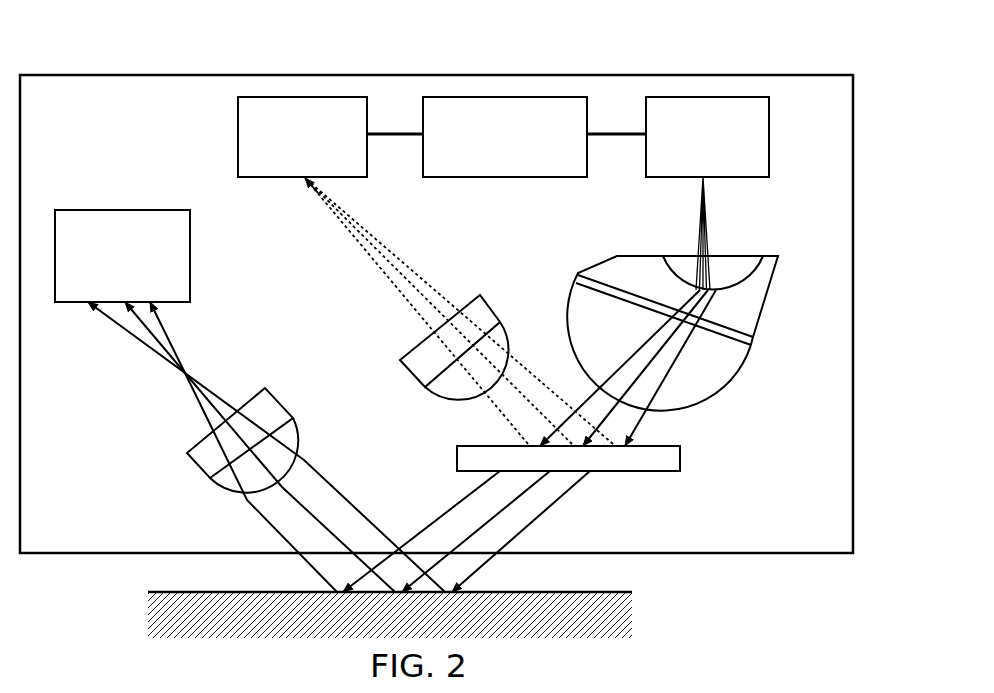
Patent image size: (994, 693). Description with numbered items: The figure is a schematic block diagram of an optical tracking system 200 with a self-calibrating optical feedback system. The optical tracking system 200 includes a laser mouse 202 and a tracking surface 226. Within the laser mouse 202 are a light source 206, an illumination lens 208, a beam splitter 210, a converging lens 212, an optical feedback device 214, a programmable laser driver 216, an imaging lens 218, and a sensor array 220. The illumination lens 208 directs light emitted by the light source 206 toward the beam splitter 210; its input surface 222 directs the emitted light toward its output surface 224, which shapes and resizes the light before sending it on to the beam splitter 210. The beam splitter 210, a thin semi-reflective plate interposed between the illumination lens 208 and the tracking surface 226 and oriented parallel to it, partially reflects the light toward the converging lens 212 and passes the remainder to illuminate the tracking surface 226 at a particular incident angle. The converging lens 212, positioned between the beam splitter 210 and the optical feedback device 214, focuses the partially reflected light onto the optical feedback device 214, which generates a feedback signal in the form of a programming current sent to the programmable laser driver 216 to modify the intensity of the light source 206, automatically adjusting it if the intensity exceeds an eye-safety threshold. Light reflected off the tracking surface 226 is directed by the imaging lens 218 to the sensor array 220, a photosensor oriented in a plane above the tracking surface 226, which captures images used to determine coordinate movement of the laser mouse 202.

The optical tracking system 200 is at (142, 64).
The laser mouse 202 is at (453, 75).
The light source 206 is at (770, 118).
The illumination lens 208 is at (578, 276).
The beam splitter 210 is at (680, 458).
The converging lens 212 is at (400, 362).
The optical feedback device 214 is at (237, 133).
The programmable laser driver 216 is at (503, 177).
The imaging lens 218 is at (198, 470).
The sensor array 220 is at (190, 237).
The input surface 222 is at (760, 278).
The output surface 224 is at (703, 403).
The tracking surface 226 is at (623, 587).